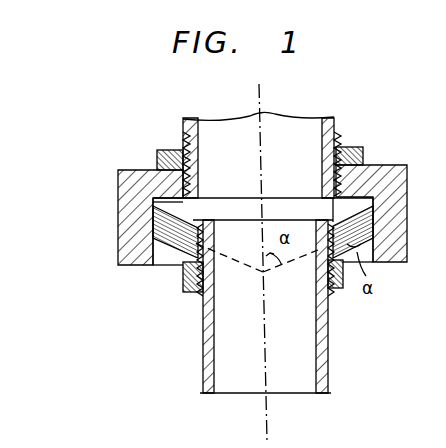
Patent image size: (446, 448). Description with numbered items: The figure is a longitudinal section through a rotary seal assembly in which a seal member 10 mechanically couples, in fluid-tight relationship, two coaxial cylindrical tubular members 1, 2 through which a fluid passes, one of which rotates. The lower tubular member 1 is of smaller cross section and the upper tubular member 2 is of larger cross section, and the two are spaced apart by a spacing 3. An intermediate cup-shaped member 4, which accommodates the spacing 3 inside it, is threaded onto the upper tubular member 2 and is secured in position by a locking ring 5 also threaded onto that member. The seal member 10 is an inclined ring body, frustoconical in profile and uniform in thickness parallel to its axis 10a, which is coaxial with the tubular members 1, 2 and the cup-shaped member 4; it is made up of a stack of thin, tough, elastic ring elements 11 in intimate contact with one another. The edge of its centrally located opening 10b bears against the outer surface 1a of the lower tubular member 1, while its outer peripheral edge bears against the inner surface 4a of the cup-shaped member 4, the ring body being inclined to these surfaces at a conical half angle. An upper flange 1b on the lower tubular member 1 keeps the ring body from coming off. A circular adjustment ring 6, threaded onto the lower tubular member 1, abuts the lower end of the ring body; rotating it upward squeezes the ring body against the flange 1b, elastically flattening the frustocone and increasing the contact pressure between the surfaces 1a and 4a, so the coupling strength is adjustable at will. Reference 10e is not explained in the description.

The lower tubular member 1 is at (330, 353).
The outer surface of the tubular member 1a is at (186, 220).
The upper flange 1b is at (333, 218).
The upper tubular member 2 is at (336, 133).
The spacing 3 is at (275, 207).
The cup-shaped member 4 is at (120, 195).
The inner surface of the cup-shaped member 4a is at (148, 214).
The locking ring 5 is at (165, 150).
The adjustment ring 6 is at (336, 290).
The seal member 10 is at (162, 248).
The axis 10a is at (268, 423).
The centrally located opening 10b is at (203, 302).
The inner surface of nut 10e is at (145, 240).
The ring elements 11 is at (368, 233).